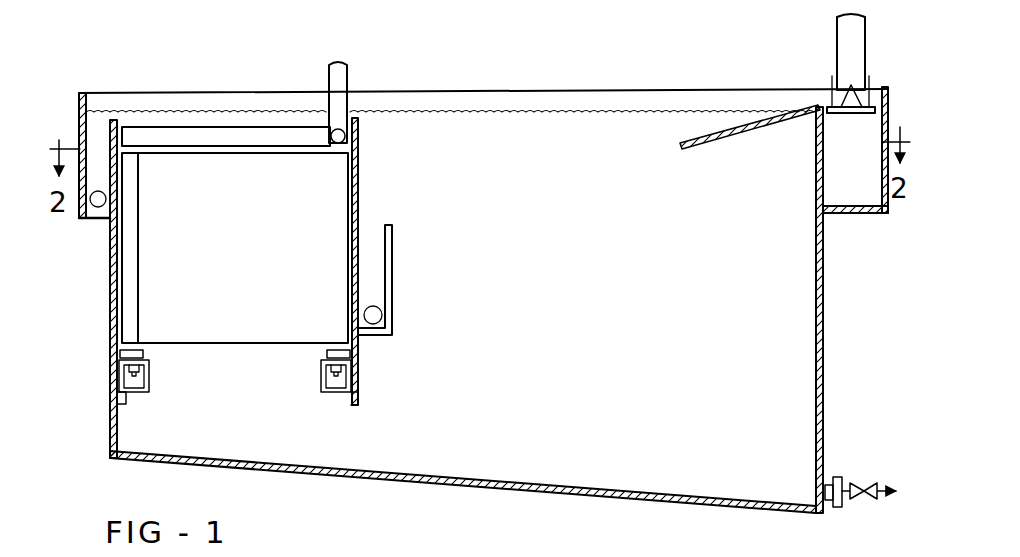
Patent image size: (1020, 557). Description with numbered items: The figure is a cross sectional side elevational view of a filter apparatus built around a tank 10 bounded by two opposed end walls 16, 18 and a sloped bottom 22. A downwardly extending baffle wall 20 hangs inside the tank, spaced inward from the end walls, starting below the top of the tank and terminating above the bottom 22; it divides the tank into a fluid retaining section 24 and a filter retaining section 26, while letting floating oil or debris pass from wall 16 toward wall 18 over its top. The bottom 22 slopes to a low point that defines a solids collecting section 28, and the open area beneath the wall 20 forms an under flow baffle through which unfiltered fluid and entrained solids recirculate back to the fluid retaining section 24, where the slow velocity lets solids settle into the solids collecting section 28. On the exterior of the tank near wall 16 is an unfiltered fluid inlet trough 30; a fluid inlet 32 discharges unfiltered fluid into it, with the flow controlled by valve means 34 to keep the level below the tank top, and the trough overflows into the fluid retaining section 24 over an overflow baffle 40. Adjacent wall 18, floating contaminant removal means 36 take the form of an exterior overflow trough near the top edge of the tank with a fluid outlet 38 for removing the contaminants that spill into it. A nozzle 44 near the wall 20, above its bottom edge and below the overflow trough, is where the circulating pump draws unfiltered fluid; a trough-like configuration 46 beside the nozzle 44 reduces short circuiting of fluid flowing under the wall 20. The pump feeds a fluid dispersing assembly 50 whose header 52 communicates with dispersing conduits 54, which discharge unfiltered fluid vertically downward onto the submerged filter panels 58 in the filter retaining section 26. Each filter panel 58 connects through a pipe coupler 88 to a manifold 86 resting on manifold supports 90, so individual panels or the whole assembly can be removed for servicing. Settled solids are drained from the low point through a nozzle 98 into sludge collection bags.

The tank 10 is at (597, 47).
The end wall 16 is at (816, 350).
The end wall 18 is at (110, 322).
The baffle wall 20 is at (358, 240).
The bottom 22 is at (466, 487).
The fluid retaining section 24 is at (596, 316).
The filter retaining section 26 is at (240, 414).
The solids collecting section 28 is at (740, 467).
The unfiltered fluid inlet trough 30 is at (882, 180).
The fluid inlet 32 is at (837, 42).
The valve means 34 is at (832, 105).
The floating contaminant removal means 36 is at (80, 127).
The fluid outlet 38 is at (93, 207).
The overflow baffle 40 is at (690, 148).
The nozzle 44 is at (378, 306).
The trough-like configuration 46 is at (392, 320).
The fluid dispersing assembly 50 is at (329, 75).
The header 52 is at (340, 128).
The dispersing conduit 54 is at (200, 125).
The filter panel 58 is at (250, 261).
The manifold 86 is at (149, 381).
The pipe coupler 88 is at (143, 355).
The manifold support 90 is at (126, 402).
The nozzle 98 is at (838, 507).